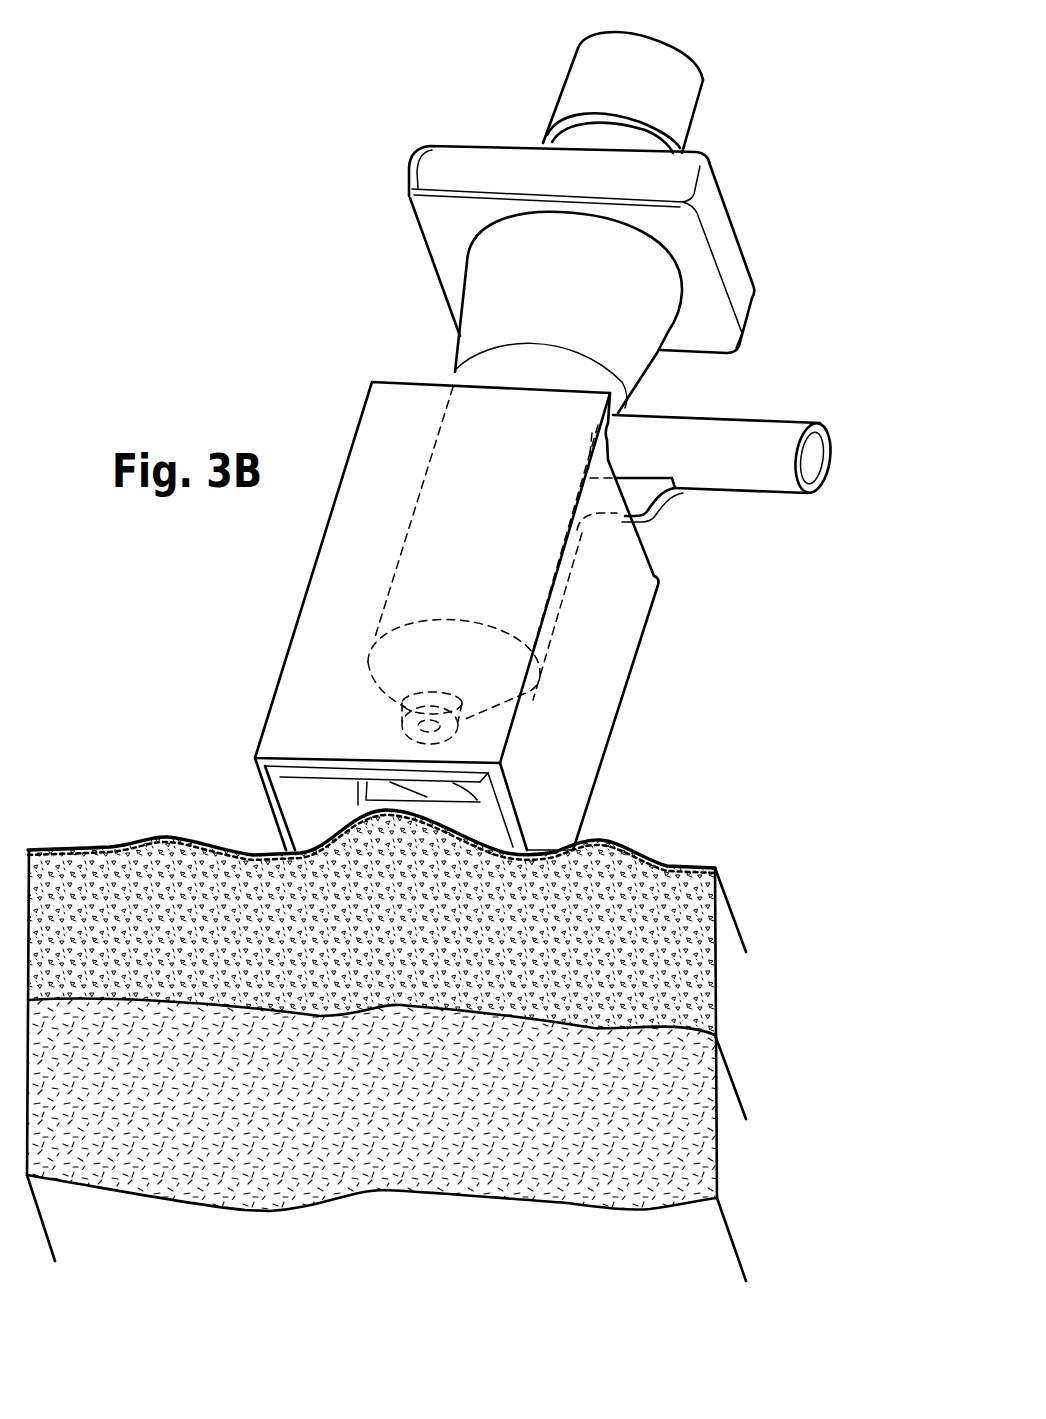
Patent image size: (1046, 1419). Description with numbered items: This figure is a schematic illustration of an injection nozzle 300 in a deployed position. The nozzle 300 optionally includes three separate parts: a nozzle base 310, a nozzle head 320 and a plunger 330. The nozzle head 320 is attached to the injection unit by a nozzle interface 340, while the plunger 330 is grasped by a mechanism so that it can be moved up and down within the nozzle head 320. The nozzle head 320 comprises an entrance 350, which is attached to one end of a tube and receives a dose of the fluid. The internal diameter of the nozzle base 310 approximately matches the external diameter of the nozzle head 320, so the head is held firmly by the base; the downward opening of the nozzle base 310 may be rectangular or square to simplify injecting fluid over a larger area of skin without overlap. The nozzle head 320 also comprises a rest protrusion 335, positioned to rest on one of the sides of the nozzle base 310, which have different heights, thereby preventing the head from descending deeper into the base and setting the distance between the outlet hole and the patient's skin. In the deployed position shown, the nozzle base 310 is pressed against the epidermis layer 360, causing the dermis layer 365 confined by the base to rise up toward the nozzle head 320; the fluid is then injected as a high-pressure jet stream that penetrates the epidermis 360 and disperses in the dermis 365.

The nozzle 300 is at (248, 188).
The nozzle base 310 is at (602, 688).
The nozzle head 320 is at (500, 320).
The plunger 330 is at (700, 108).
The nozzle interface 340 is at (720, 198).
The rest protrusion 335 is at (655, 512).
The entrance 350 is at (750, 418).
The epidermis layer 360 is at (620, 842).
The dermis layer 365 is at (680, 952).